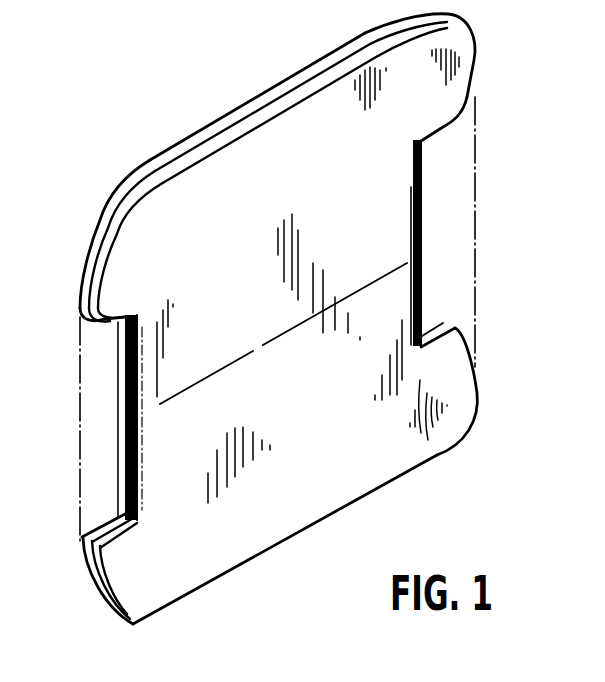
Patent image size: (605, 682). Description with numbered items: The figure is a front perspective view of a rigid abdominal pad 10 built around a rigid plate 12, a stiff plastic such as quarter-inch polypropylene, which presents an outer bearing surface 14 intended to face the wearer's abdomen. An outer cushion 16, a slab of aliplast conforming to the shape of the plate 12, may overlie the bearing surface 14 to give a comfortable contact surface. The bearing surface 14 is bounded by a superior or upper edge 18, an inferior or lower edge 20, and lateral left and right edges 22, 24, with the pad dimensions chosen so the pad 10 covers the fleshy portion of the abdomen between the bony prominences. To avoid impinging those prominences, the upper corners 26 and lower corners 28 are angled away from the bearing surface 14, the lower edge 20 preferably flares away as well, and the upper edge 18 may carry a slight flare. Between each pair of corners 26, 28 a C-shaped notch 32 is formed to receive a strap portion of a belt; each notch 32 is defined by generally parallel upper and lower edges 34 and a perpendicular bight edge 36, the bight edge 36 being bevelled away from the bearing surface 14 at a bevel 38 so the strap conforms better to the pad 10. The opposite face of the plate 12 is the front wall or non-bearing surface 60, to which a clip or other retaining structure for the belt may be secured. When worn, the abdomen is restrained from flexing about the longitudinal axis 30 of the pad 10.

The rigid abdominal pad 10 is at (547, 211).
The rigid plate 12 is at (300, 162).
The outer bearing surface 14 is at (124, 420).
The outer cushion 16 is at (235, 116).
The superior or upper edge 18 is at (322, 62).
The inferior or lower edge 20 is at (355, 492).
The lateral left edge 22 is at (80, 394).
The lateral right edge 24 is at (478, 173).
The upper corners 26 is at (114, 203).
The lower corners 28 is at (466, 411).
The longitudinal axis 30 is at (235, 363).
The C-shaped notches 32 is at (464, 255).
The upper and lower edges of notch 34 is at (470, 120).
The bight edges 36 is at (424, 234).
The bevel 38 is at (424, 183).
The front wall or non-bearing surface 60 is at (188, 190).